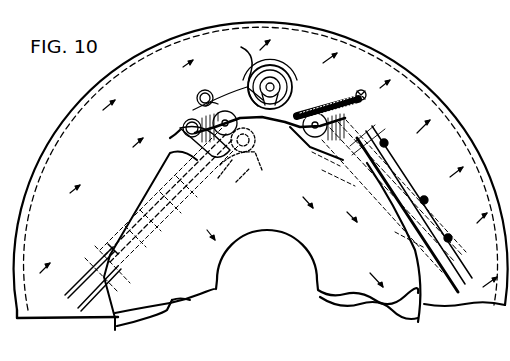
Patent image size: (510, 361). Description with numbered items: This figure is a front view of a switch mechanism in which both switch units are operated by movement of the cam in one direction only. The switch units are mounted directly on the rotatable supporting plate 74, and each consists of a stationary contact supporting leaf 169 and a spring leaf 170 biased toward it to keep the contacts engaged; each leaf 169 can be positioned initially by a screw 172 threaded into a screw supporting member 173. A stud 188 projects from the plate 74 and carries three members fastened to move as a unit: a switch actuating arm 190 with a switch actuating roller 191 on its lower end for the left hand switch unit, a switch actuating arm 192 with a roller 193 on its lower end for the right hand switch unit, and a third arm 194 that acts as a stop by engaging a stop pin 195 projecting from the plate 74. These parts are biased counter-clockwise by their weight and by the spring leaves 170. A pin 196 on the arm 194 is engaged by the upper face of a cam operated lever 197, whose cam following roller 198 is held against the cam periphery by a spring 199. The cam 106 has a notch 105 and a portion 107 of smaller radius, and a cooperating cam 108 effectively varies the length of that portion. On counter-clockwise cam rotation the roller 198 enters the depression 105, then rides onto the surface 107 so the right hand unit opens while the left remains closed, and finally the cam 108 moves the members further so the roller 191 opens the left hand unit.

The rotatable supporting plate 74 is at (88, 120).
The notch 105 is at (225, 178).
The cam 106 is at (187, 280).
The portion of smaller radius 107 is at (270, 132).
The cam 108 is at (160, 312).
The stationary contact supporting leaf 169 is at (96, 312).
The spring leaf 170 is at (76, 282).
The screw 172 is at (220, 203).
The screw supporting member 173 is at (178, 235).
The stud 188 is at (272, 85).
The switch actuating arm 190 is at (262, 150).
The switch actuating roller 191 is at (237, 160).
The switch actuating arm 192 is at (310, 104).
The roller 193 is at (341, 122).
The arm 194 is at (233, 78).
The stop pin 195 is at (186, 124).
The pin 196 is at (203, 90).
The cam operated lever 197 is at (228, 72).
The cam following roller 198 is at (216, 138).
The spring 199 is at (373, 84).